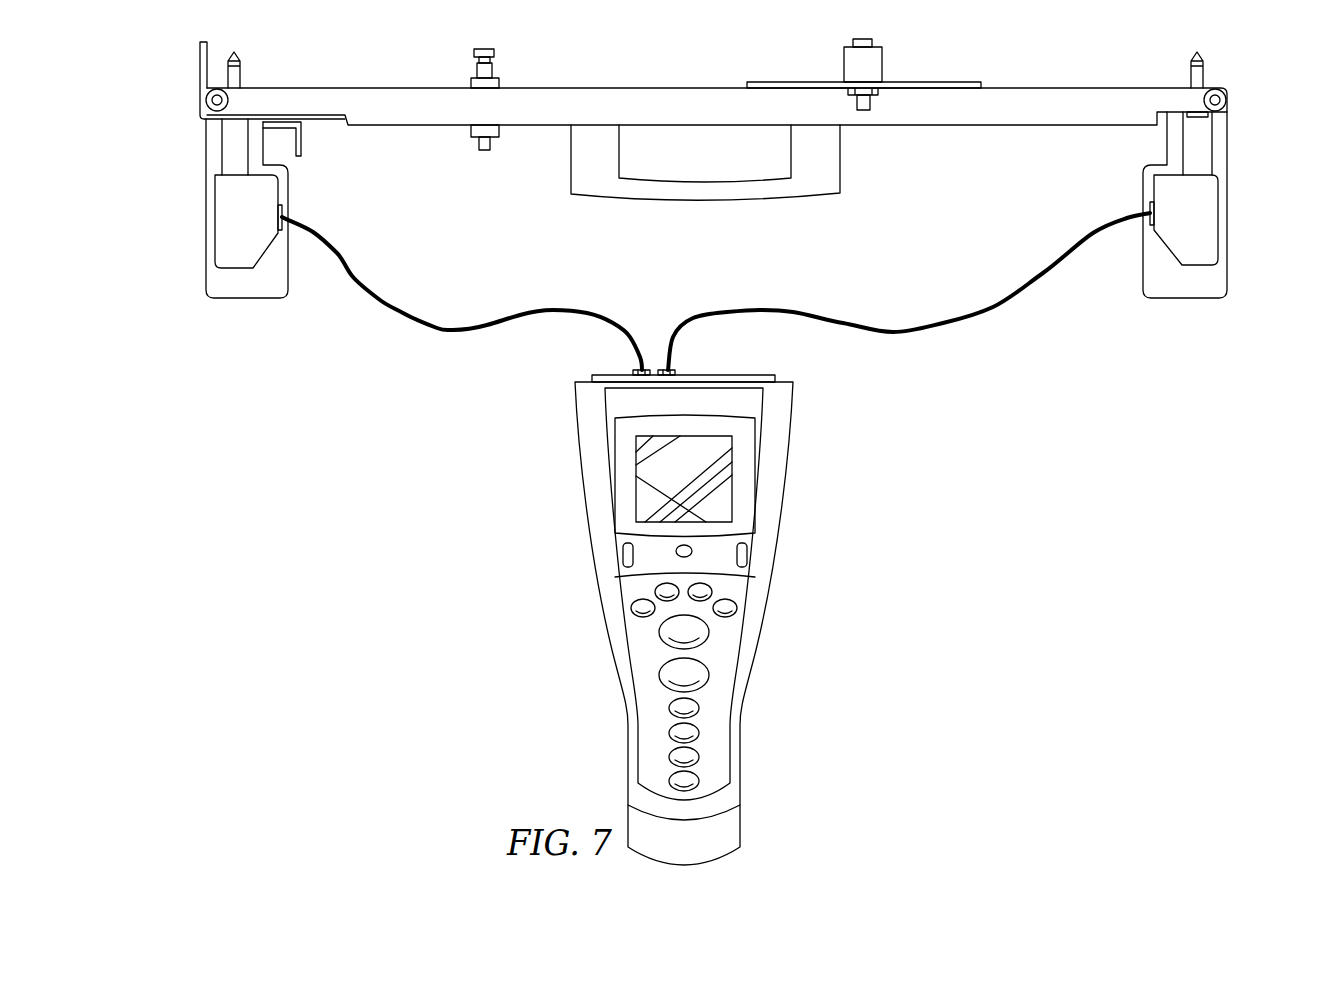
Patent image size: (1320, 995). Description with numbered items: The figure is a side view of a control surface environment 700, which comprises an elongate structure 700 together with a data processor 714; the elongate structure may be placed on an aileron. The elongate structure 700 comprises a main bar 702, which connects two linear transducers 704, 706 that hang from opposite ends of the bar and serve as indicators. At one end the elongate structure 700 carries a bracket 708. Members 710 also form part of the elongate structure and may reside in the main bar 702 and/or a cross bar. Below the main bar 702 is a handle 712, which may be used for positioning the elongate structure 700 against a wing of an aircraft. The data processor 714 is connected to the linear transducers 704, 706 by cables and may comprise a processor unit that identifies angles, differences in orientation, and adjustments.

The control surface environment / elongate structure 700 is at (424, 636).
The main bar 702 is at (654, 87).
The linear transducer 704 is at (214, 231).
The linear transducer 706 is at (1219, 229).
The bracket 708 is at (200, 68).
The members 710 is at (474, 53).
The handle 712 is at (841, 155).
The data processor 714 is at (610, 636).